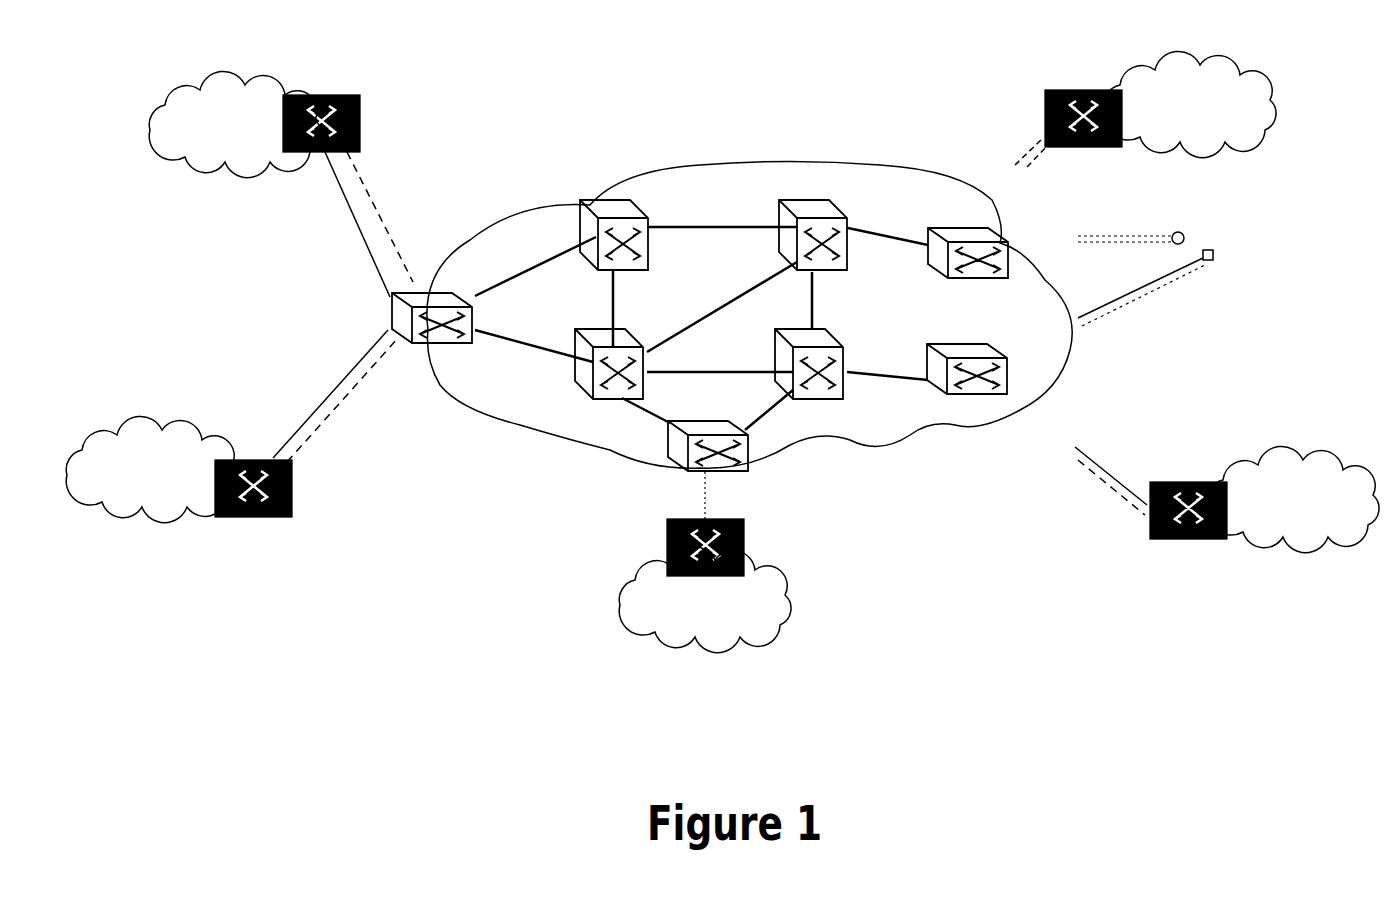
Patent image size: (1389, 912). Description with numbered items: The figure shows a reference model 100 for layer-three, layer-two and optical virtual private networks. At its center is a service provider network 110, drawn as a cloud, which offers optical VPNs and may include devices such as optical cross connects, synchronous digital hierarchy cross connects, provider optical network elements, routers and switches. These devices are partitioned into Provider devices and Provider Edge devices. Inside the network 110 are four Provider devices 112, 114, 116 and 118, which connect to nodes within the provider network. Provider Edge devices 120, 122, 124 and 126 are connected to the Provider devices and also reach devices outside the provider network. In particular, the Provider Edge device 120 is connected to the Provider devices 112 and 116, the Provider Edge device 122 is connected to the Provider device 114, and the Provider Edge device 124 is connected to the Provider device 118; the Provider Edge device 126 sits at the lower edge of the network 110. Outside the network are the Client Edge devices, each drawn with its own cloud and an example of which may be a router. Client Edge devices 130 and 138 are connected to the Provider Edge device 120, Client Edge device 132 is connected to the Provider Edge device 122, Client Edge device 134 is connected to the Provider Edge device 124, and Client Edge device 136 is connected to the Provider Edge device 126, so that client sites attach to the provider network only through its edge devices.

The network system 100 is at (350, 582).
The service provider network 110 is at (704, 163).
The Provider device 112 is at (623, 225).
The Provider device 114 is at (815, 225).
The Provider device 116 is at (609, 377).
The Provider device 118 is at (822, 376).
The Provider Edge device 120 is at (438, 330).
The Provider Edge device 122 is at (968, 265).
The Provider Edge device 124 is at (967, 383).
The Provider Edge device 126 is at (724, 469).
The Client Edge device 130 is at (274, 123).
The Client Edge device 132 is at (1151, 104).
The Client Edge device 134 is at (1231, 506).
The Client Edge device 136 is at (721, 586).
The Client Edge device 138 is at (212, 477).